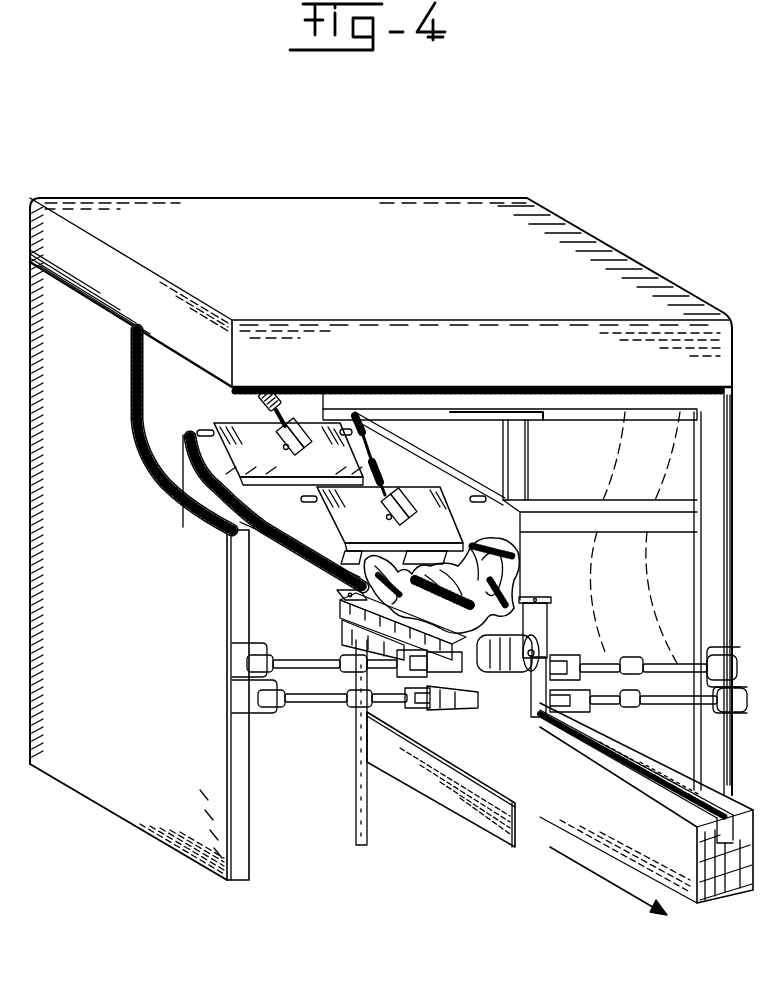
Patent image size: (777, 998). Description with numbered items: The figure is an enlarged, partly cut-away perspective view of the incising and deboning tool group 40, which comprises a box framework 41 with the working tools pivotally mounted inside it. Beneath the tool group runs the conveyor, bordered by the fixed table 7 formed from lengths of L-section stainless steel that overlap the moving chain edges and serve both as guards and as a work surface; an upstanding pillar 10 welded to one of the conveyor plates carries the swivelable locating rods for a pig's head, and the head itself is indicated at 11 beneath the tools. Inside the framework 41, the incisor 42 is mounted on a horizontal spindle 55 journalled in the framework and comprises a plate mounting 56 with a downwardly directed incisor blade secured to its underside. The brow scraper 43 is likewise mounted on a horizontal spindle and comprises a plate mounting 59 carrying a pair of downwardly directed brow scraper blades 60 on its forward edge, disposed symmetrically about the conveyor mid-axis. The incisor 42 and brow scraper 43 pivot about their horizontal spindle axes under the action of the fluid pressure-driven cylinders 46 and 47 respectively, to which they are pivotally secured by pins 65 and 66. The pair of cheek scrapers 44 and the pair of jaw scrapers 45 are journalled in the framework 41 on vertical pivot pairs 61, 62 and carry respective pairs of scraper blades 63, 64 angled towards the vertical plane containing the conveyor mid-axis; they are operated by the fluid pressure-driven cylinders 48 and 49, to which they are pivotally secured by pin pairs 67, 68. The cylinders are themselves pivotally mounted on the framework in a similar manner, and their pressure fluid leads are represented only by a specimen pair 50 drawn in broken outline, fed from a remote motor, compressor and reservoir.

The table 7 is at (582, 757).
The pillar 10 is at (538, 718).
The hide piece 11 is at (481, 540).
The incising and deboning tool group 40 is at (622, 246).
The box framework 41 is at (158, 843).
The incisor 42 is at (238, 426).
The brow scraper 43 is at (452, 472).
The cheek scrapers 44 is at (340, 620).
The jaw scrapers 45 is at (345, 646).
The fluid pressure-driven cylinder 46 is at (286, 398).
The fluid pressure-driven cylinder 47 is at (395, 442).
The fluid pressure-driven cylinders 48 is at (285, 660).
The fluid pressure-driven cylinders 49 is at (296, 706).
The pressure fluid leads 50 is at (597, 602).
The horizontal spindle 55 is at (201, 428).
The plate mounting 56 is at (294, 459).
The plate mounting 59 is at (393, 518).
The brow scraper blades 60 is at (430, 552).
The vertical pivot pair 61 is at (337, 593).
The vertical pivot pair 62 is at (536, 596).
The scraper blades 63 is at (542, 631).
The scraper blades 64 is at (485, 704).
The pin 65 is at (280, 441).
The pin 66 is at (390, 518).
The pin pair 67 is at (412, 706).
The pin pair 68 is at (405, 712).